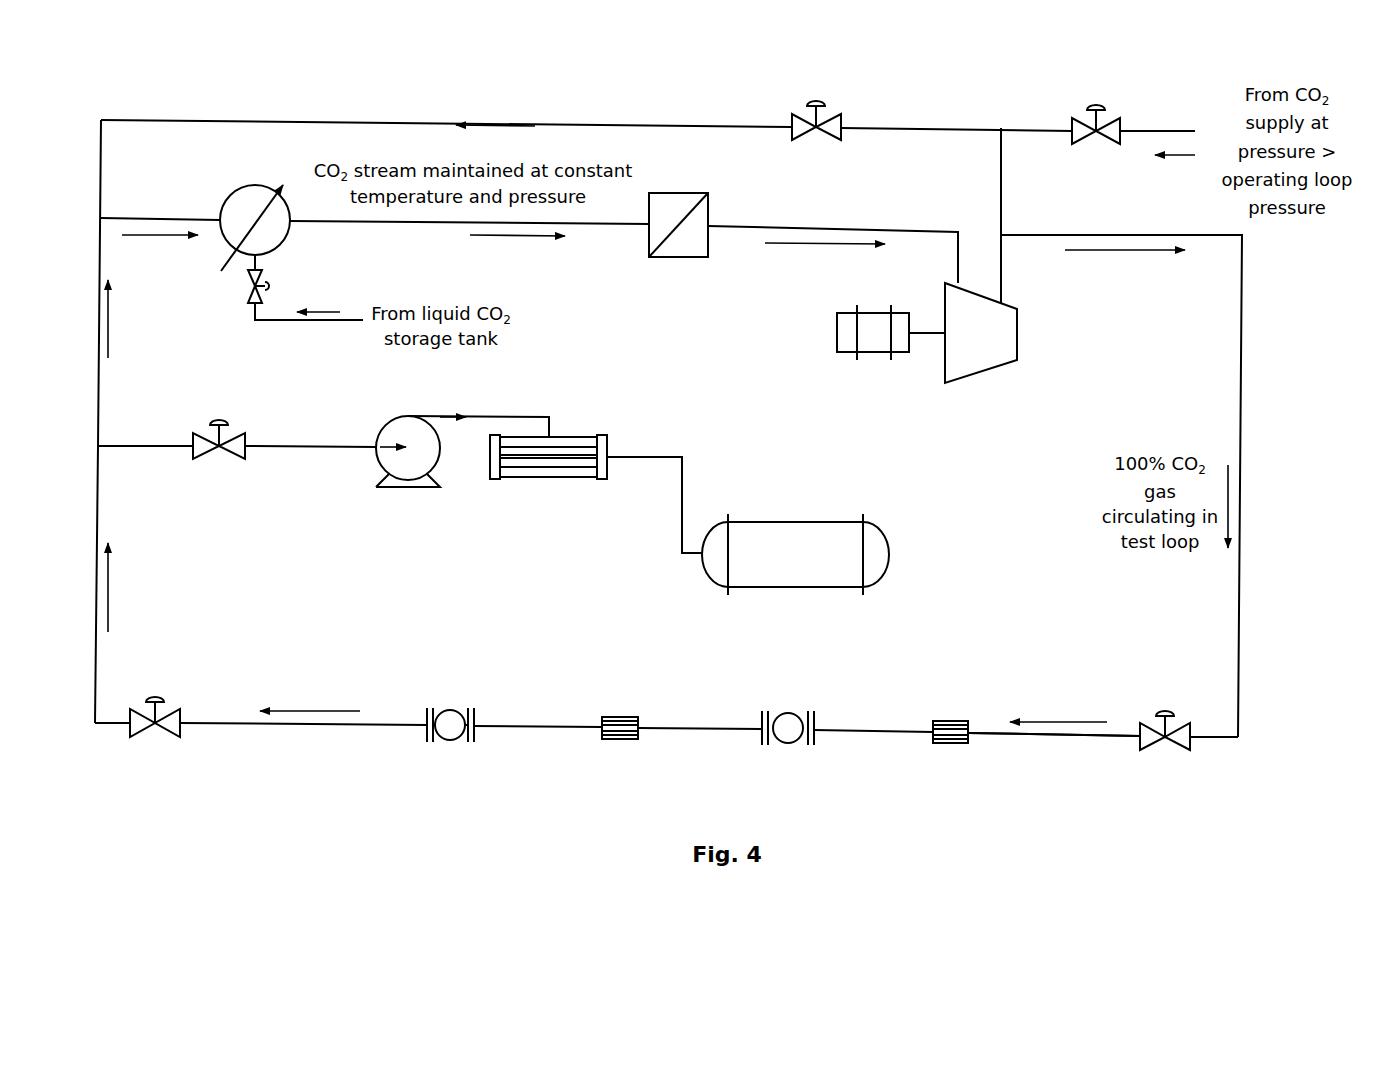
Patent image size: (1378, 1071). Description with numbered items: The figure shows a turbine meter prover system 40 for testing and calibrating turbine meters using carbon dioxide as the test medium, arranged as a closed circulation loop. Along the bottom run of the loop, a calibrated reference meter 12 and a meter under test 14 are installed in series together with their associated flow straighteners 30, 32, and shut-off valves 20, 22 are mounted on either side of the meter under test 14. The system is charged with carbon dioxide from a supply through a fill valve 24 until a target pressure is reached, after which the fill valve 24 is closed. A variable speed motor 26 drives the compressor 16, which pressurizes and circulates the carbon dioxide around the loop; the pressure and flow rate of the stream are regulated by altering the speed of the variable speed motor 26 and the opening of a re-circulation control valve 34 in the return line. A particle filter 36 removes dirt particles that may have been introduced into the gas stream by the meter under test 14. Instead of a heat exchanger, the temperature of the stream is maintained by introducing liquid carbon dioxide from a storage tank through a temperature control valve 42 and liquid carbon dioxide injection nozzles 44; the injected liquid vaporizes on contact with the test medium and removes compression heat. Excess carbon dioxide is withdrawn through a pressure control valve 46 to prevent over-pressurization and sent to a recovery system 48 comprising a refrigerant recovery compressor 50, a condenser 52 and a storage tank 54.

The calibrated reference meter 12 is at (785, 761).
The meter under test 14 is at (451, 754).
The gas compressor 16 is at (1060, 322).
The shut-off valve 20 is at (1164, 756).
The shut-off valve 22 is at (153, 745).
The fill valve 24 is at (1096, 138).
The variable speed motor 26 is at (800, 331).
The flow straightener 30 is at (950, 749).
The flow straightener 32 is at (622, 749).
The re-circulation control valve 34 is at (816, 135).
The particle filter 36 is at (675, 269).
The turbine meter prover system 40 is at (1017, 845).
The temperature control valve 42 is at (269, 270).
The liquid carbon dioxide injection nozzles 44 is at (221, 204).
The pressure control valve 46 is at (243, 428).
The recovery system 48 is at (439, 591).
The refrigerant recovery compressor 50 is at (384, 418).
The condenser 52 is at (501, 486).
The storage tank 54 is at (746, 590).